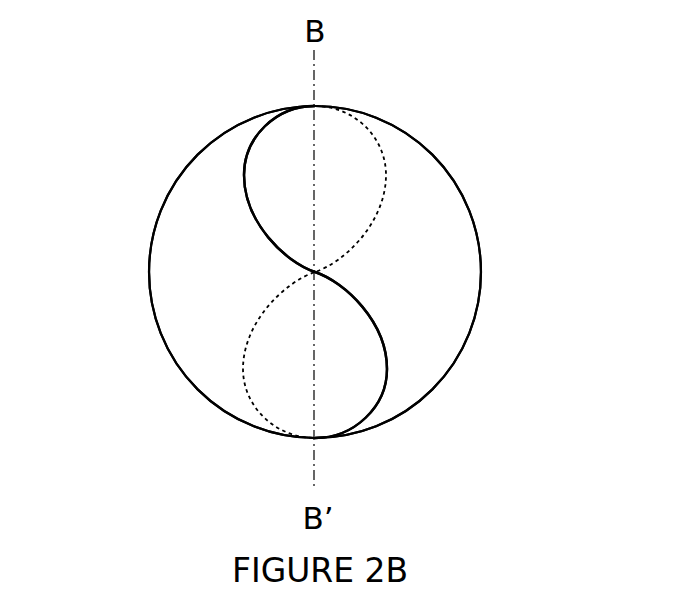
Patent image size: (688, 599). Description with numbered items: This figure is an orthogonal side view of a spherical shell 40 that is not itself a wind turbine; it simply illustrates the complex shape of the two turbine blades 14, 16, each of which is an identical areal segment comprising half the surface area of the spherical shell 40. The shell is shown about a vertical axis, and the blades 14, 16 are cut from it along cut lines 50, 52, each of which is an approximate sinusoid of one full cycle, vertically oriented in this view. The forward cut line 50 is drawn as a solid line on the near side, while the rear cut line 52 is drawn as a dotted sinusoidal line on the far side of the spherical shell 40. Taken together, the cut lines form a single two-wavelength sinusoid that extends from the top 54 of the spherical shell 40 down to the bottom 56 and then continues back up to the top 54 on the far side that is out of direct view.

The spherical shell 40 is at (257, 92).
The blade 14 is at (202, 212).
The blade 16 is at (435, 263).
The forward cut line 50 is at (253, 223).
The rear cut line 52 is at (386, 180).
The top of the spherical shell 54 is at (247, 130).
The bottom of the spherical shell 56 is at (373, 422).